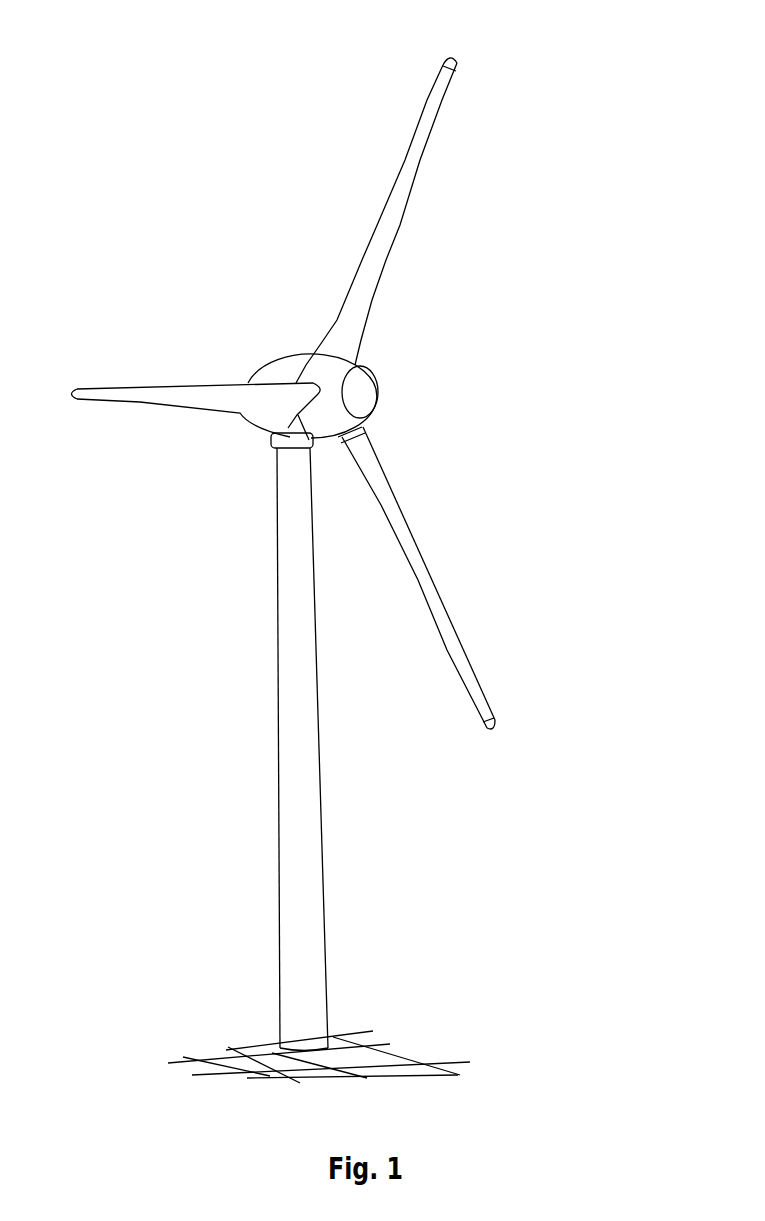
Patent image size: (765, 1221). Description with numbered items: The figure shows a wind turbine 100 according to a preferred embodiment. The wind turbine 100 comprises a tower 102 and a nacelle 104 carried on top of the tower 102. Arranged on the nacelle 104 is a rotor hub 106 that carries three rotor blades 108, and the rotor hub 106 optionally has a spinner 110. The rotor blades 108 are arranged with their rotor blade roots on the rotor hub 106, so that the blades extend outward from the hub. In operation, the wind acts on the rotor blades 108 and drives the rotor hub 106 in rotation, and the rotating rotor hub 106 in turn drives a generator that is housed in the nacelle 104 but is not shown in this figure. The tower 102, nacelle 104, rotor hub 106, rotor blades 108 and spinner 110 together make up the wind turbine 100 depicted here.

The wind turbine 100 is at (237, 502).
The tower 102 is at (307, 842).
The nacelle 104 is at (285, 372).
The rotor hub 106 is at (488, 287).
The rotor blades 108 is at (408, 172).
The spinner 110 is at (367, 388).